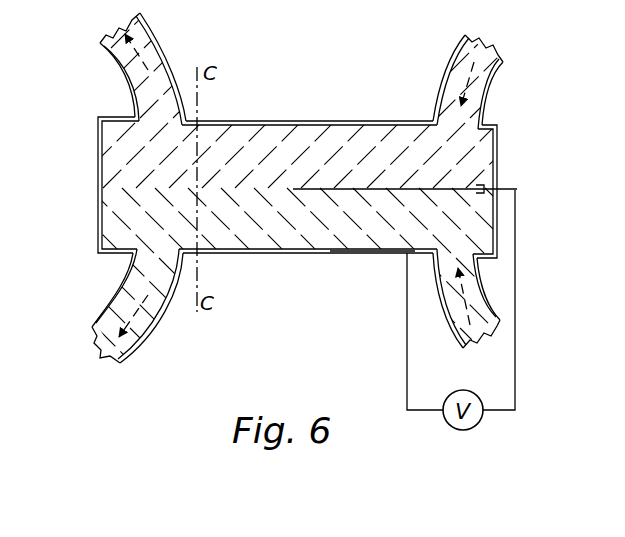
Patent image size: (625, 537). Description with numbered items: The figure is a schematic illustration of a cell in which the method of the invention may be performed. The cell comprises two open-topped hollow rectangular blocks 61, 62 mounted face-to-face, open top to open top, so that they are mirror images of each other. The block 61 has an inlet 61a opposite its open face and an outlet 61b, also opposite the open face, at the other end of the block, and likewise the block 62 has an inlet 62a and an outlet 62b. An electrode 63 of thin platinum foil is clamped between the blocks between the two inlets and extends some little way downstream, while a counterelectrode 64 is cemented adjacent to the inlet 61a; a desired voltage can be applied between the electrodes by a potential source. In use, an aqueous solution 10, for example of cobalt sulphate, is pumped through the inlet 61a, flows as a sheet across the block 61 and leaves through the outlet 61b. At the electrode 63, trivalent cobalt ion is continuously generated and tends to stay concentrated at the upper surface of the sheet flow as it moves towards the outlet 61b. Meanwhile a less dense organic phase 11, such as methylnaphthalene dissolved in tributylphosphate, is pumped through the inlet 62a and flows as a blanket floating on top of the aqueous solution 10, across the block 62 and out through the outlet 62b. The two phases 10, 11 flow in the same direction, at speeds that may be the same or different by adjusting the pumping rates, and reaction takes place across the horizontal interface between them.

The block 62 is at (97, 146).
The block 61 is at (97, 208).
The outlet 62b is at (163, 50).
The inlet 62a is at (493, 76).
The inlet 61a is at (493, 301).
The outlet 61b is at (143, 347).
The organic phase 11 is at (450, 70).
The aqueous solution 10 is at (450, 328).
The electrode 63 is at (338, 188).
The counterelectrode 64 is at (353, 252).